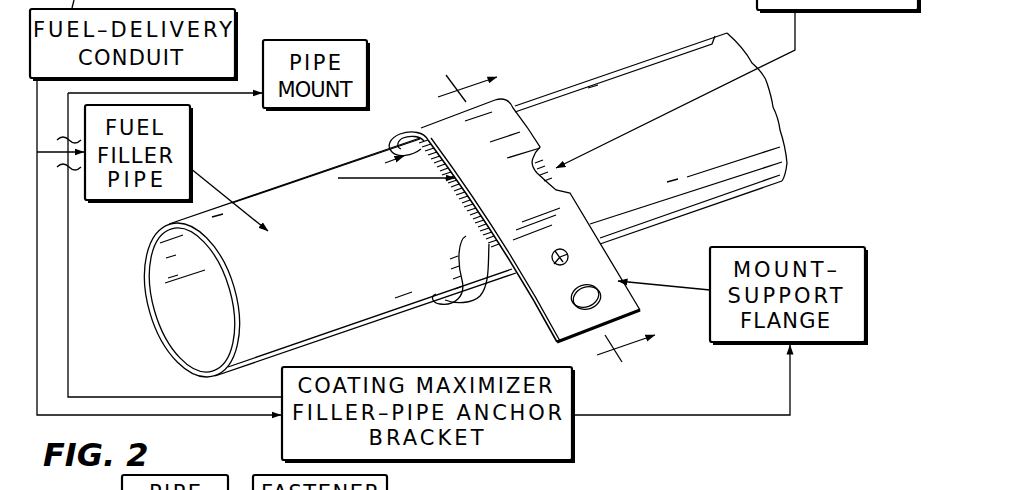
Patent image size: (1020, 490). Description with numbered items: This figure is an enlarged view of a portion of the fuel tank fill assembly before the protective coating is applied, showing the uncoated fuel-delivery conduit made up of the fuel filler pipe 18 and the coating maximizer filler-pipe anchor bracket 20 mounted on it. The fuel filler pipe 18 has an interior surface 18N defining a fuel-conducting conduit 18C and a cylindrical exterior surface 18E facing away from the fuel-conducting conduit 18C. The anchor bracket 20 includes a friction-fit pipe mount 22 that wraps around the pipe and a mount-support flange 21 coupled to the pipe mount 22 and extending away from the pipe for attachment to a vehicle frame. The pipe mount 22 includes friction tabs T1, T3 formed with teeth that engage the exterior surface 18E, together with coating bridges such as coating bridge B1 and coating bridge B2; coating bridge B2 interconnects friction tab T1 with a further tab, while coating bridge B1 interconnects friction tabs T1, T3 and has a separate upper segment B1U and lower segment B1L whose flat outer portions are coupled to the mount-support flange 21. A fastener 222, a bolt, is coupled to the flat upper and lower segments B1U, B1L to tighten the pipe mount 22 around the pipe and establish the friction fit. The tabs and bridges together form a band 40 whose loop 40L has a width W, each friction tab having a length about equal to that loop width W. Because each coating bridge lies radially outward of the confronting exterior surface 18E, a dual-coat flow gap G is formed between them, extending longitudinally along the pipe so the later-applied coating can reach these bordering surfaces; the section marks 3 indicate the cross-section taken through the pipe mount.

The fuel filler pipe 18 is at (117, 200).
The fuel-conducting conduit 18C is at (186, 299).
The interior surface 18N is at (174, 335).
The exterior surface 18E is at (404, 293).
The coating maximizer filler-pipe anchor bracket 20 is at (358, 362).
The mount-support flange 21 is at (832, 245).
The friction-fit pipe mount 22 is at (368, 65).
The fastener 222 is at (572, 233).
The band 40 is at (590, 253).
The loop 40L is at (497, 119).
The coating bridge B1 is at (500, 145).
The upper segment B1U is at (540, 143).
The lower segment B1L is at (503, 288).
The coating bridge B2 is at (420, 126).
The friction tab T1 is at (418, 147).
The friction tab T3 is at (468, 262).
The loop width W is at (555, 188).
The dual-coat flow gap G is at (458, 215).
The section line 3- 3 is at (541, 224).